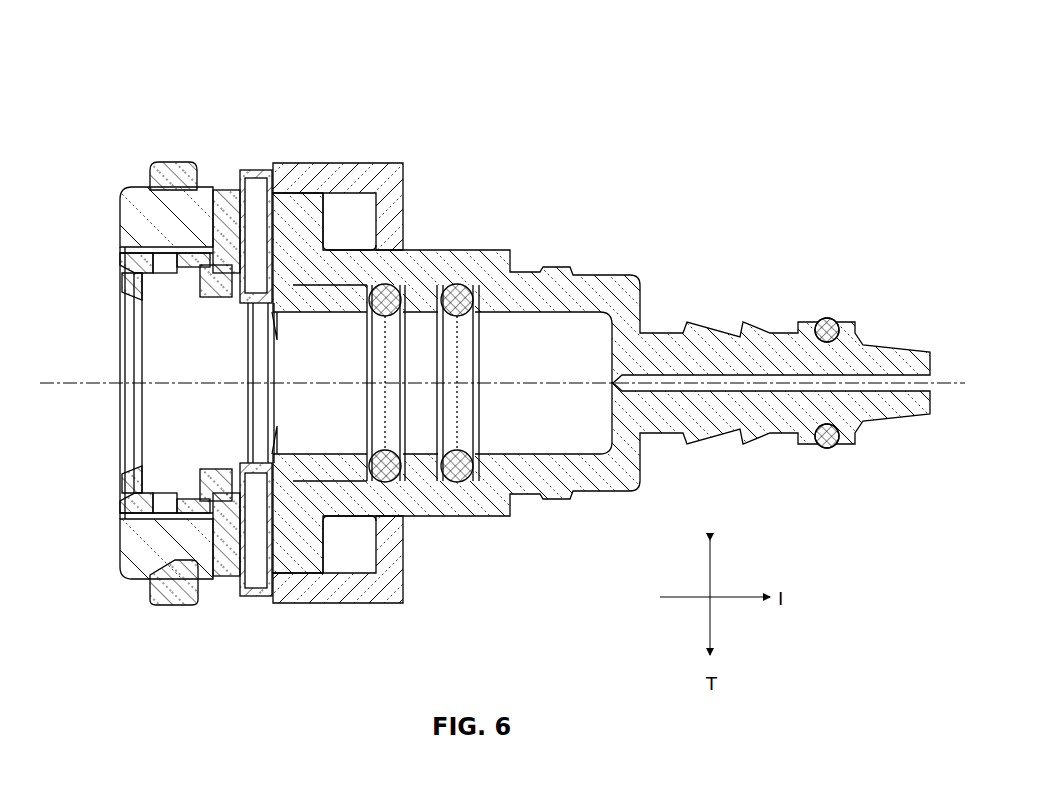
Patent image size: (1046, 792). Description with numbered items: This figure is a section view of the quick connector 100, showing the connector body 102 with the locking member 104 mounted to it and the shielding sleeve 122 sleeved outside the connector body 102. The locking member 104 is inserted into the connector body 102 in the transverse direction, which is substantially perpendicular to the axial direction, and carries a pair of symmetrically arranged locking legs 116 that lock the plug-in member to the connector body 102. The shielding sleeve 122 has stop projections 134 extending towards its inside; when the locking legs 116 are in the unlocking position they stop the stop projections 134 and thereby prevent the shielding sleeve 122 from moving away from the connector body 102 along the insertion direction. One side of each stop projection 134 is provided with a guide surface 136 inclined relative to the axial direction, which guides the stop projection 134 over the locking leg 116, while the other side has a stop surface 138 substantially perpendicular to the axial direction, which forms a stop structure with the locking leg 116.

The quick connector 100 is at (506, 34).
The connector body 102 is at (572, 472).
The locking member 104 is at (270, 597).
The locking legs 116 is at (205, 297).
The shielding sleeve 122 is at (180, 603).
The stop projection 134 is at (195, 197).
The guide surface 136 is at (151, 190).
The stop surface 138 is at (222, 242).